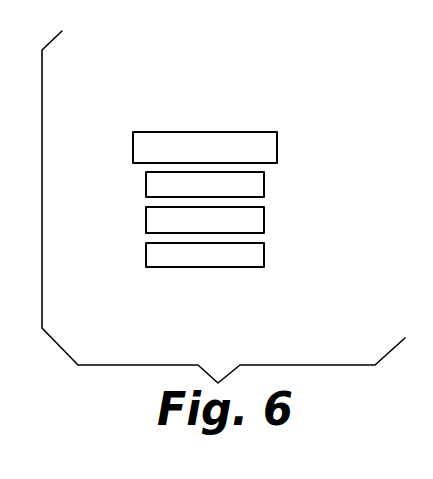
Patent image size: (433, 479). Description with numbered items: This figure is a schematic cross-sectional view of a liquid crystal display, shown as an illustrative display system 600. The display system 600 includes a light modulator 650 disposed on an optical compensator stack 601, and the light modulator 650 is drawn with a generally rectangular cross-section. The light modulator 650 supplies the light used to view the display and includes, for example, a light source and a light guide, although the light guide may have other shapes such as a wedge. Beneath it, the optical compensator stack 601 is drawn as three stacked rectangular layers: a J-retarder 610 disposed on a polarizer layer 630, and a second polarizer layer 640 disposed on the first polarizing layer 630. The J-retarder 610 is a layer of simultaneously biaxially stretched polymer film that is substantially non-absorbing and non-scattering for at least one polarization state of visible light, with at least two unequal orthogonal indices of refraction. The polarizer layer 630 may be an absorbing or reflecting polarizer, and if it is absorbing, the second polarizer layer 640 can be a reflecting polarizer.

The display system 600 is at (272, 89).
The light modulator 650 is at (273, 149).
The optical compensator stack 601 is at (135, 167).
The J-retarder 610 is at (262, 186).
The polarizer layer 630 is at (262, 220).
The second polarizer layer 640 is at (262, 255).